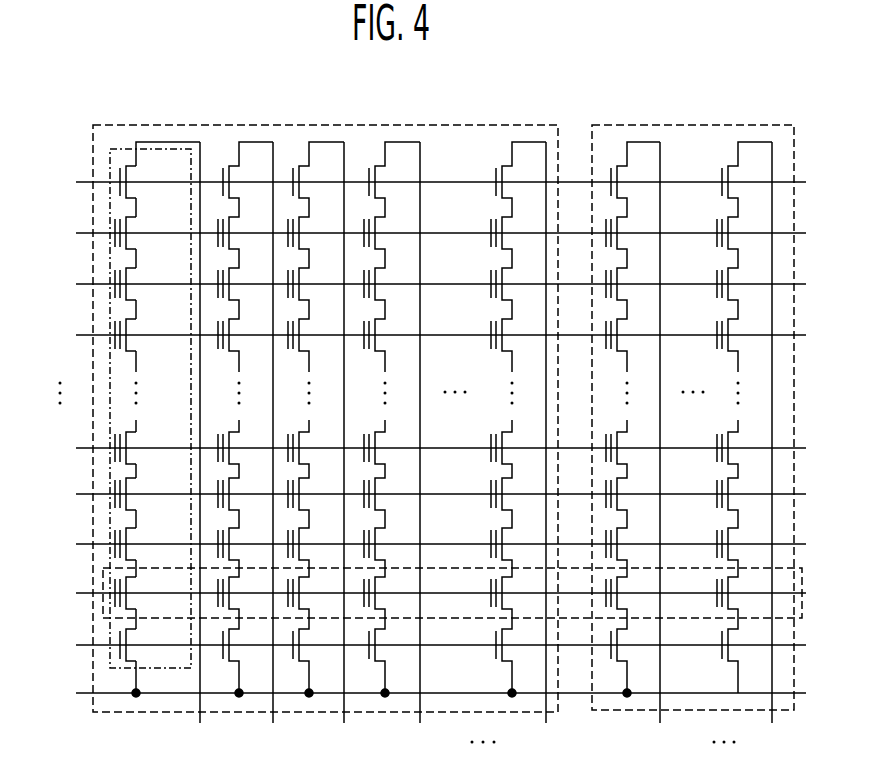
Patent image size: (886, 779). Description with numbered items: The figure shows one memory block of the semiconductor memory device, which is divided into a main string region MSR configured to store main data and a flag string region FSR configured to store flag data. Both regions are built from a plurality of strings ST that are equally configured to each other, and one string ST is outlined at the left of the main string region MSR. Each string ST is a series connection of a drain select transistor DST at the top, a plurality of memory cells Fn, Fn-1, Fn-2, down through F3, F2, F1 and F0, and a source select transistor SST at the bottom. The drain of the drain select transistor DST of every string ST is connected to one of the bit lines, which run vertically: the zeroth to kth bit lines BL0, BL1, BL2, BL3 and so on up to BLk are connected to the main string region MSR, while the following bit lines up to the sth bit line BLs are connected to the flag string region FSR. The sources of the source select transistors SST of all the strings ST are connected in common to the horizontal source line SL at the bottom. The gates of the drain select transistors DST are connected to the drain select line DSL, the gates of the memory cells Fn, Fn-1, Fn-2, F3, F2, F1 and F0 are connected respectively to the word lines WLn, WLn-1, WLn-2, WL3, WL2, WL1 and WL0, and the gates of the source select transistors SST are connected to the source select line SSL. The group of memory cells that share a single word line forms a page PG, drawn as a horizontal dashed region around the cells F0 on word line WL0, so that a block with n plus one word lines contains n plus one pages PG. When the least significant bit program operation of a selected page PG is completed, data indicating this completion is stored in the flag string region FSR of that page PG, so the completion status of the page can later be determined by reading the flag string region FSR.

The main string region MSR is at (372, 125).
The flag string region FSR is at (698, 125).
The string ST is at (124, 148).
The page PG is at (802, 572).
The drain select line DSL is at (424, 182).
The word line n WLn is at (422, 233).
The word line n-1 WLn-1 is at (414, 284).
The word line n-2 WLn-2 is at (414, 335).
The word line 3 WL3 is at (422, 448).
The word line 2 WL2 is at (422, 494).
The word line 1 WL1 is at (422, 544).
The word line 0 WL0 is at (422, 593).
The source select line SSL is at (425, 645).
The source line SL is at (429, 693).
The bit line 0 BL0 is at (200, 447).
The bit line 1 BL1 is at (273, 447).
The bit line 2 BL2 is at (344, 447).
The bit line 3 BL3 is at (420, 447).
The bit line k BLk is at (546, 447).
The bit line s BLs is at (772, 447).
The drain select transistor DST is at (146, 186).
The memory cell n Fn is at (137, 238).
The memory cell n-1 Fn-1 is at (145, 289).
The memory cell n-2 Fn-2 is at (145, 340).
The memory cell 3 F3 is at (137, 448).
The memory cell 2 F2 is at (137, 493).
The memory cell 1 F1 is at (137, 542).
The memory cell 0 F0 is at (137, 592).
The source select transistor SST is at (145, 644).